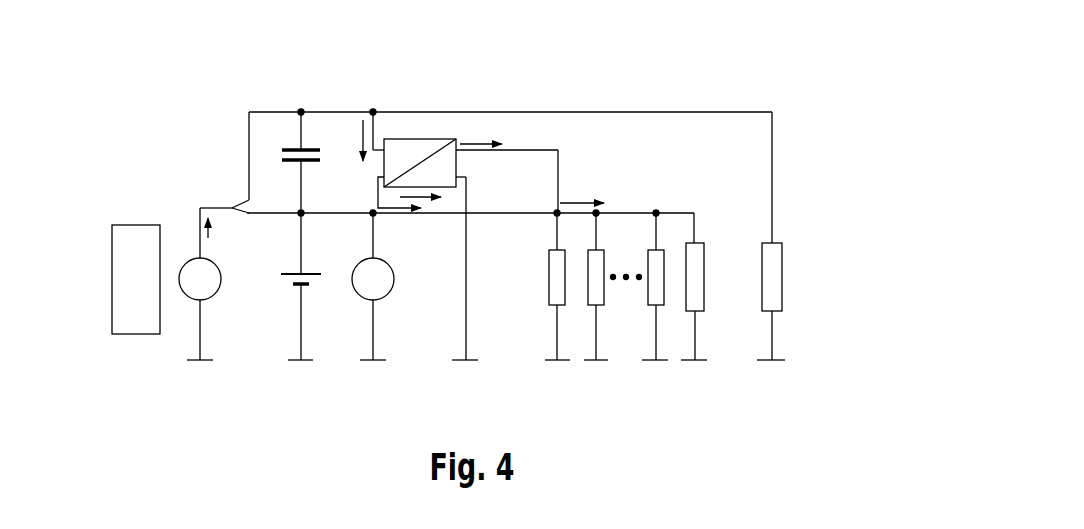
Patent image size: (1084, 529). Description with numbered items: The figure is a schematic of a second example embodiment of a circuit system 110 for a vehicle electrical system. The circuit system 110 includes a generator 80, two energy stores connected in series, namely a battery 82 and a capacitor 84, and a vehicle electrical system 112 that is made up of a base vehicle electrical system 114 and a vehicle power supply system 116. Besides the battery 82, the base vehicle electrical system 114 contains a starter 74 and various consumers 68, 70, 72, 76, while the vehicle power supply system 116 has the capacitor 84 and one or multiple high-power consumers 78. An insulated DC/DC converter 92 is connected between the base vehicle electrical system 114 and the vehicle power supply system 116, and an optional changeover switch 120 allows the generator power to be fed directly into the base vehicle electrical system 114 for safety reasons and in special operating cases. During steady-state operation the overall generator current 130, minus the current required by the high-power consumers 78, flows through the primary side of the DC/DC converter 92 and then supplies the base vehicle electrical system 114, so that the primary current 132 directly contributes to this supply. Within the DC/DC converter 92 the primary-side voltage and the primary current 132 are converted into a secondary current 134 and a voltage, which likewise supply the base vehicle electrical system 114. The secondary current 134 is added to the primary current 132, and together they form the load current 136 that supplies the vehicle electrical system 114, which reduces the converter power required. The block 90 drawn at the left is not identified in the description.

The circuit system 110 is at (228, 91).
The vehicle electrical system 112 is at (733, 86).
The base vehicle electrical system 114 is at (653, 348).
The vehicle power supply system 116 is at (620, 101).
The changeover switch 120 is at (231, 198).
The overall generator current 130 is at (217, 233).
The primary current 132 is at (358, 134).
The secondary current 134 is at (479, 137).
The load current 136 is at (579, 197).
The capacitor 84 is at (288, 146).
The insulated DC/DC converter 92 is at (420, 136).
The control unit 90 is at (124, 342).
The generator 80 is at (224, 314).
The battery 82 is at (281, 307).
The starter 74 is at (394, 312).
The consumer 68 is at (545, 313).
The consumer 70 is at (586, 313).
The consumer 72 is at (641, 315).
The consumer 76 is at (681, 316).
The high-power consumer 78 is at (746, 316).